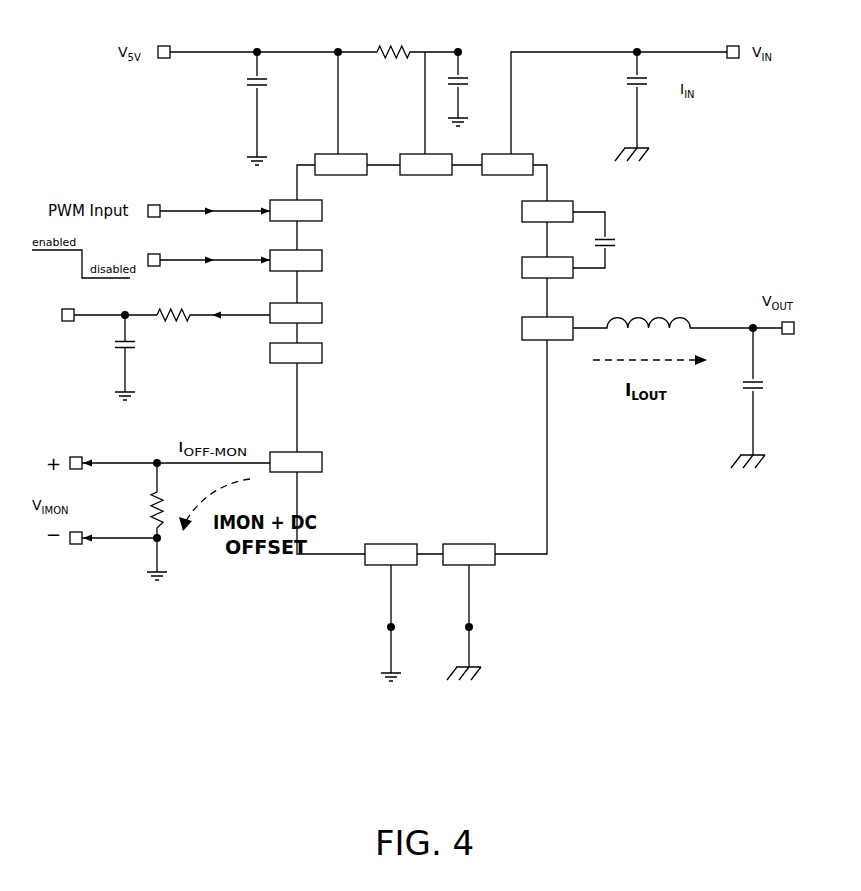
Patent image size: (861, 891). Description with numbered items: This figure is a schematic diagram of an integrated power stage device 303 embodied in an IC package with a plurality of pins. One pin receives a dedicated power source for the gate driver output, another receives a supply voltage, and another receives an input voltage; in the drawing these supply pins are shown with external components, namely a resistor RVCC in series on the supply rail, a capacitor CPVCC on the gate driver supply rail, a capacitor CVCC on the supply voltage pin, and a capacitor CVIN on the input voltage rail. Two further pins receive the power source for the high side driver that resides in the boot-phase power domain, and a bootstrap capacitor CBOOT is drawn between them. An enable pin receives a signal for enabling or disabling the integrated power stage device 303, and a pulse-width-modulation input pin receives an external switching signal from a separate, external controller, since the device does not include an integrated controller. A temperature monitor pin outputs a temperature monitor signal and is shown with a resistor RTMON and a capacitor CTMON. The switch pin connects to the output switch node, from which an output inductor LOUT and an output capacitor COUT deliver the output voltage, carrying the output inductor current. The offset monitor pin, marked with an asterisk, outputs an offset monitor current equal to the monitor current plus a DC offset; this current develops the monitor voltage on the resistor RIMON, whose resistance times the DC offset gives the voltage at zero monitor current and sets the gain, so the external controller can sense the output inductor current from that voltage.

The integrated power stage device 303 is at (421, 359).
The VCC resistor RVCC is at (417, 38).
The PVCC capacitor CPVCC is at (280, 108).
The VCC capacitor CVCC is at (474, 89).
The input capacitor CVIN is at (619, 106).
The TMON resistor RTMON is at (213, 328).
The TMON capacitor CTMON is at (106, 357).
The resistor RIMON is at (135, 521).
The bootstrap capacitor CBOOT is at (618, 240).
The output inductor LOUT is at (677, 307).
The output capacitor COUT is at (767, 398).